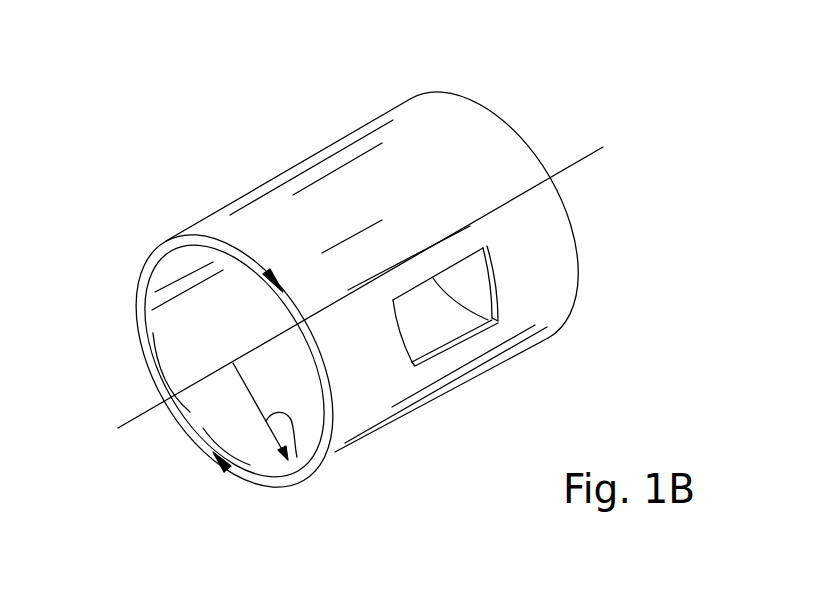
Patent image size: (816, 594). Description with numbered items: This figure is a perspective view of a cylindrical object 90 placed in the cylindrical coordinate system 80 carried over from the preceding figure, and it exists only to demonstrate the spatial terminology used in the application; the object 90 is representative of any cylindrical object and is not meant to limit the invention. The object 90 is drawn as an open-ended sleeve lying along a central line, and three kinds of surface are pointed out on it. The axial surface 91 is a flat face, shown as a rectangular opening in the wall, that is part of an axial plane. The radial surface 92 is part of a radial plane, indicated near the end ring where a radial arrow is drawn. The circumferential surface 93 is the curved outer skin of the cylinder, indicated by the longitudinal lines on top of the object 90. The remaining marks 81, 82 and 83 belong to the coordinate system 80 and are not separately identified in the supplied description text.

The cylindrical coordinate system 80 is at (517, 112).
The longitudinal axis 81 is at (127, 423).
The retaining tab 82 is at (308, 456).
The front rim 83 is at (142, 264).
The object 90 is at (396, 96).
The axial surface 91 is at (469, 337).
The radial surface 92 is at (247, 473).
The circumferential surface 93 is at (335, 188).